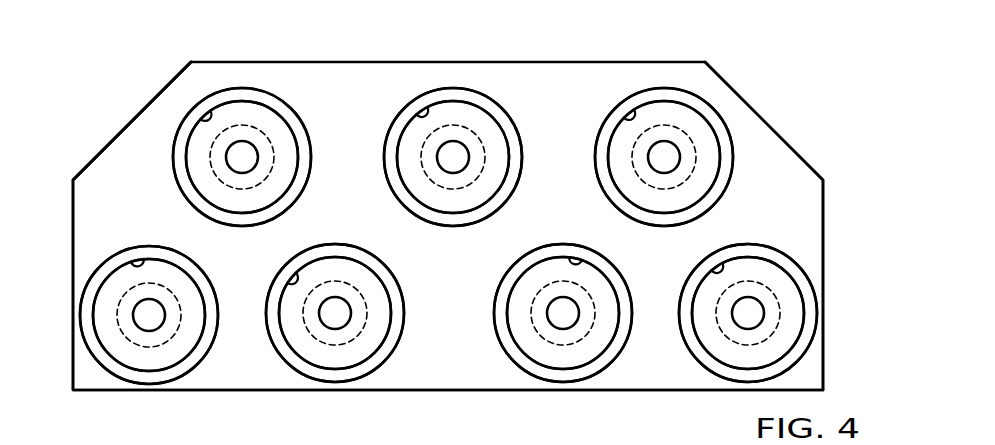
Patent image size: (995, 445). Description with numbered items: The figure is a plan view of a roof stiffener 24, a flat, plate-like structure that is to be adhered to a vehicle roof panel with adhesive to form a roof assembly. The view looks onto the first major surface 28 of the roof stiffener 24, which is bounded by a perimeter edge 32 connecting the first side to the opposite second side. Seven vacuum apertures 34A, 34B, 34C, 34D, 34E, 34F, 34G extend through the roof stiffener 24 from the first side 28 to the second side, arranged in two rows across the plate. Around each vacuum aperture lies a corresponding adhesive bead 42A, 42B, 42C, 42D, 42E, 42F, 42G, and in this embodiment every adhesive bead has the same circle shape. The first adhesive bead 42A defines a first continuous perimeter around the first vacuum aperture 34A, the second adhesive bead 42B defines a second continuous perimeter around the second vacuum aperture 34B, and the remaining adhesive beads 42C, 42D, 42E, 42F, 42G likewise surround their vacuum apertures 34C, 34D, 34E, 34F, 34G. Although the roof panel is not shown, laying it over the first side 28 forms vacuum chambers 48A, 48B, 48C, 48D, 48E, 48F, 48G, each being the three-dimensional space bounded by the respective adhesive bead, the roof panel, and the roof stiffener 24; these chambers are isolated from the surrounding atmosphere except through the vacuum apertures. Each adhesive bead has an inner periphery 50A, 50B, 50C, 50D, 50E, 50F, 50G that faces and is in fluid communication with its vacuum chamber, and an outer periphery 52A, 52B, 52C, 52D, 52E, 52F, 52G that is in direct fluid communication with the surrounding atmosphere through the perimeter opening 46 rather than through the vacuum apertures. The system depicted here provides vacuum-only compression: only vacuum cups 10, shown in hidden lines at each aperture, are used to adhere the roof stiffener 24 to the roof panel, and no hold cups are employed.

The vacuum cup 10 is at (427, 183).
The roof stiffener 24 is at (57, 145).
The first major surface 28 is at (768, 158).
The perimeter edge 32 is at (140, 112).
The perimeter opening 46 is at (98, 157).
The first vacuum aperture 34A is at (141, 321).
The second vacuum aperture 34B is at (242, 150).
The vacuum aperture 34C is at (330, 320).
The vacuum aperture 34D is at (456, 150).
The vacuum aperture 34E is at (572, 318).
The vacuum aperture 34F is at (667, 153).
The vacuum aperture 34G is at (757, 320).
The first adhesive bead 42A is at (88, 334).
The second adhesive bead 42B is at (283, 112).
The adhesive bead 42C is at (273, 298).
The adhesive bead 42D is at (456, 95).
The adhesive bead 42E is at (514, 362).
The adhesive bead 42F is at (682, 97).
The adhesive bead 42G is at (792, 270).
The first vacuum chamber 48A is at (118, 300).
The second vacuum chamber 48B is at (255, 125).
The vacuum chamber 48C is at (365, 336).
The vacuum chamber 48D is at (481, 130).
The vacuum chamber 48E is at (552, 280).
The vacuum chamber 48F is at (662, 192).
The vacuum chamber 48G is at (722, 338).
The inner periphery 50A is at (141, 262).
The inner periphery 50B is at (203, 118).
The inner periphery 50C is at (296, 281).
The inner periphery 50D is at (420, 113).
The inner periphery 50E is at (578, 258).
The inner periphery 50F is at (628, 114).
The inner periphery 50G is at (720, 270).
The outer periphery 52A is at (102, 265).
The outer periphery 52B is at (173, 155).
The outer periphery 52C is at (344, 246).
The outer periphery 52D is at (390, 136).
The outer periphery 52E is at (521, 261).
The outer periphery 52F is at (596, 157).
The outer periphery 52G is at (811, 281).